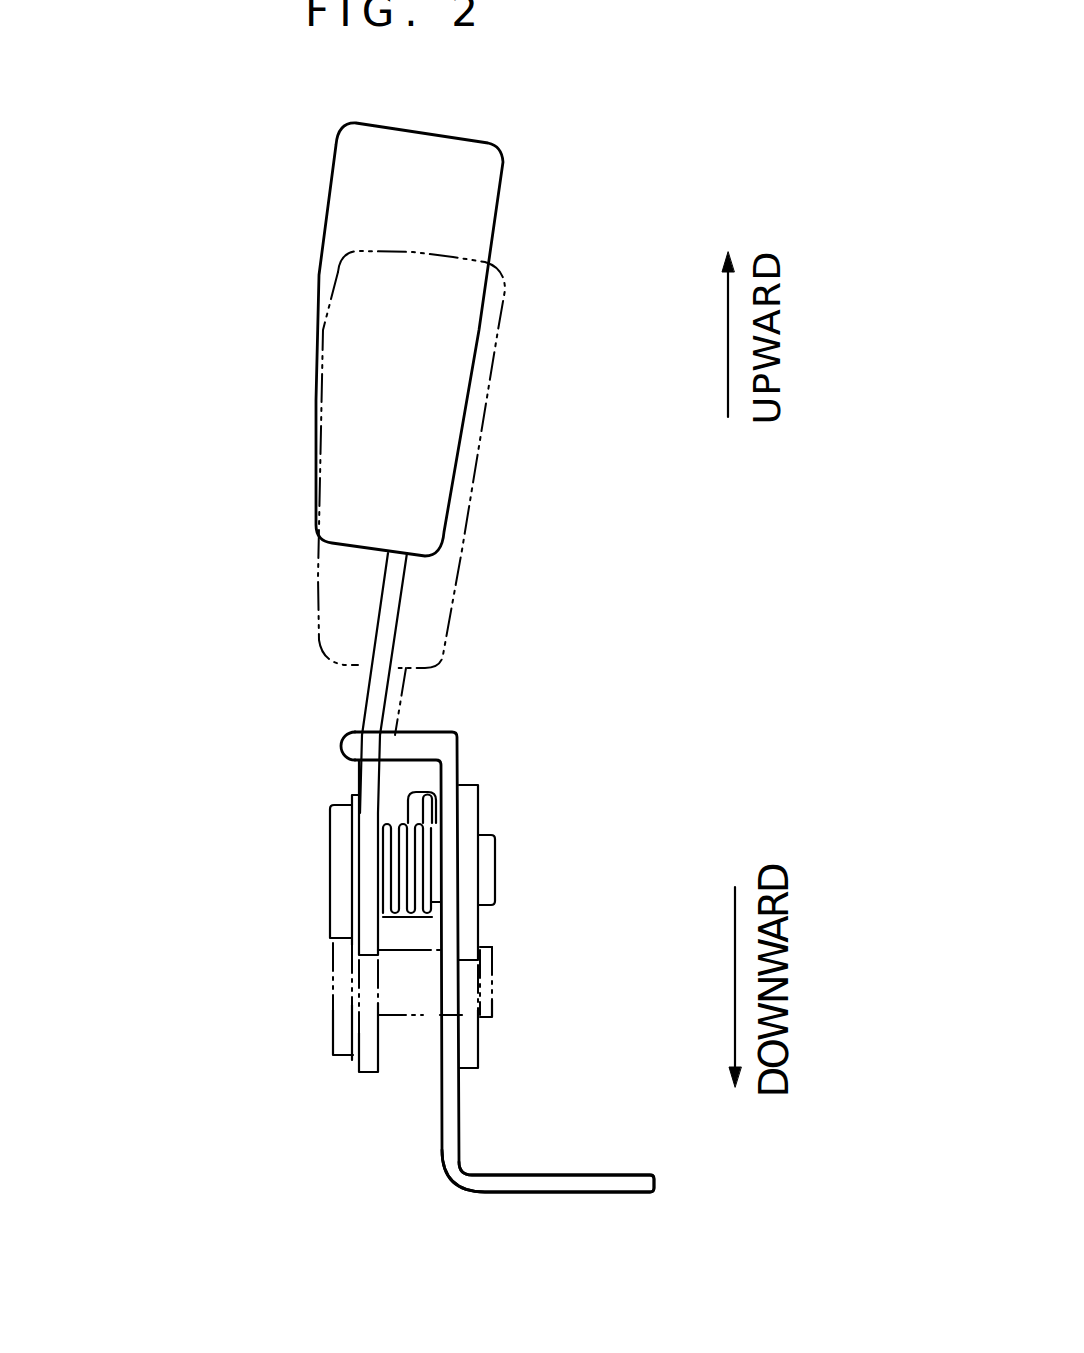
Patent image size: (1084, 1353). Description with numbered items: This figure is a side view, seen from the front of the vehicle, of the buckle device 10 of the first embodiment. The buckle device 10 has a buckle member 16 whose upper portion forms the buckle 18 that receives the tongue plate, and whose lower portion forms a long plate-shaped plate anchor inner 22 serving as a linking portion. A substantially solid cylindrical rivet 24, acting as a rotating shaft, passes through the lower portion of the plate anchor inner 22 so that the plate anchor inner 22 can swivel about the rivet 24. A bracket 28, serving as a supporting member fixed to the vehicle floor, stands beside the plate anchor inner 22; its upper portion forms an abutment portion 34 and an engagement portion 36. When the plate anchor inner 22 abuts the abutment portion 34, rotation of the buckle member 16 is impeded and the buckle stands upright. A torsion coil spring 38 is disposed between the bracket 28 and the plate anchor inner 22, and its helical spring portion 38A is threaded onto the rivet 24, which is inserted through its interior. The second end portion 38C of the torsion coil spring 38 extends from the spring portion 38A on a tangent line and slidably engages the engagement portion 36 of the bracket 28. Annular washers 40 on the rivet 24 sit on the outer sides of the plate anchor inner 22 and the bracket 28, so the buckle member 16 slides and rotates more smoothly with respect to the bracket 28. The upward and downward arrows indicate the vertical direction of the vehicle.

The buckle device 10 is at (270, 182).
The buckle member 16 is at (504, 178).
The buckle 18 is at (490, 242).
The plate anchor inner 22 is at (397, 618).
The rivet 24 is at (480, 866).
The bracket 28 is at (463, 1120).
The abutment portion 34 is at (343, 740).
The engagement portion 36 is at (440, 756).
The torsion coil spring 38 is at (435, 843).
The spring portion 38A is at (416, 917).
The second end portion 38C is at (437, 801).
The annular washers 40 is at (353, 893).